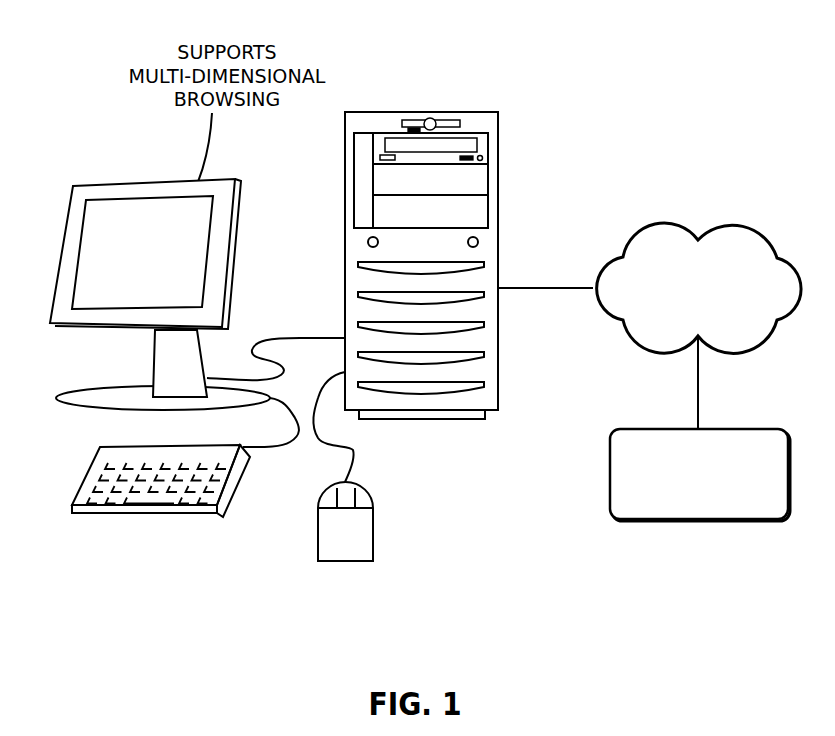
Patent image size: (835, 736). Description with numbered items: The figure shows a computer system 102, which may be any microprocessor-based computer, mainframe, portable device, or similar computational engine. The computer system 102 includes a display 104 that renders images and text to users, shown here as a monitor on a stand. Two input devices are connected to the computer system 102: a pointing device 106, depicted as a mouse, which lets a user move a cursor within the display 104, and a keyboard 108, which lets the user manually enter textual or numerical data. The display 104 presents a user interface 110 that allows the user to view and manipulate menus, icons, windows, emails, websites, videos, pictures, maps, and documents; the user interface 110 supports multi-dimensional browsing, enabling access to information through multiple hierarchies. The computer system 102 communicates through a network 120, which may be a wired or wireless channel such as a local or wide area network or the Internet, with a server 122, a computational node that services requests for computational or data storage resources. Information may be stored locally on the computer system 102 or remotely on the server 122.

The computer system 102 is at (421, 222).
The display 104 is at (143, 262).
The pointing device 106 is at (345, 562).
The keyboard 108 is at (103, 517).
The user interface 110 is at (142, 252).
The network 120 is at (699, 288).
The server 122 is at (700, 475).